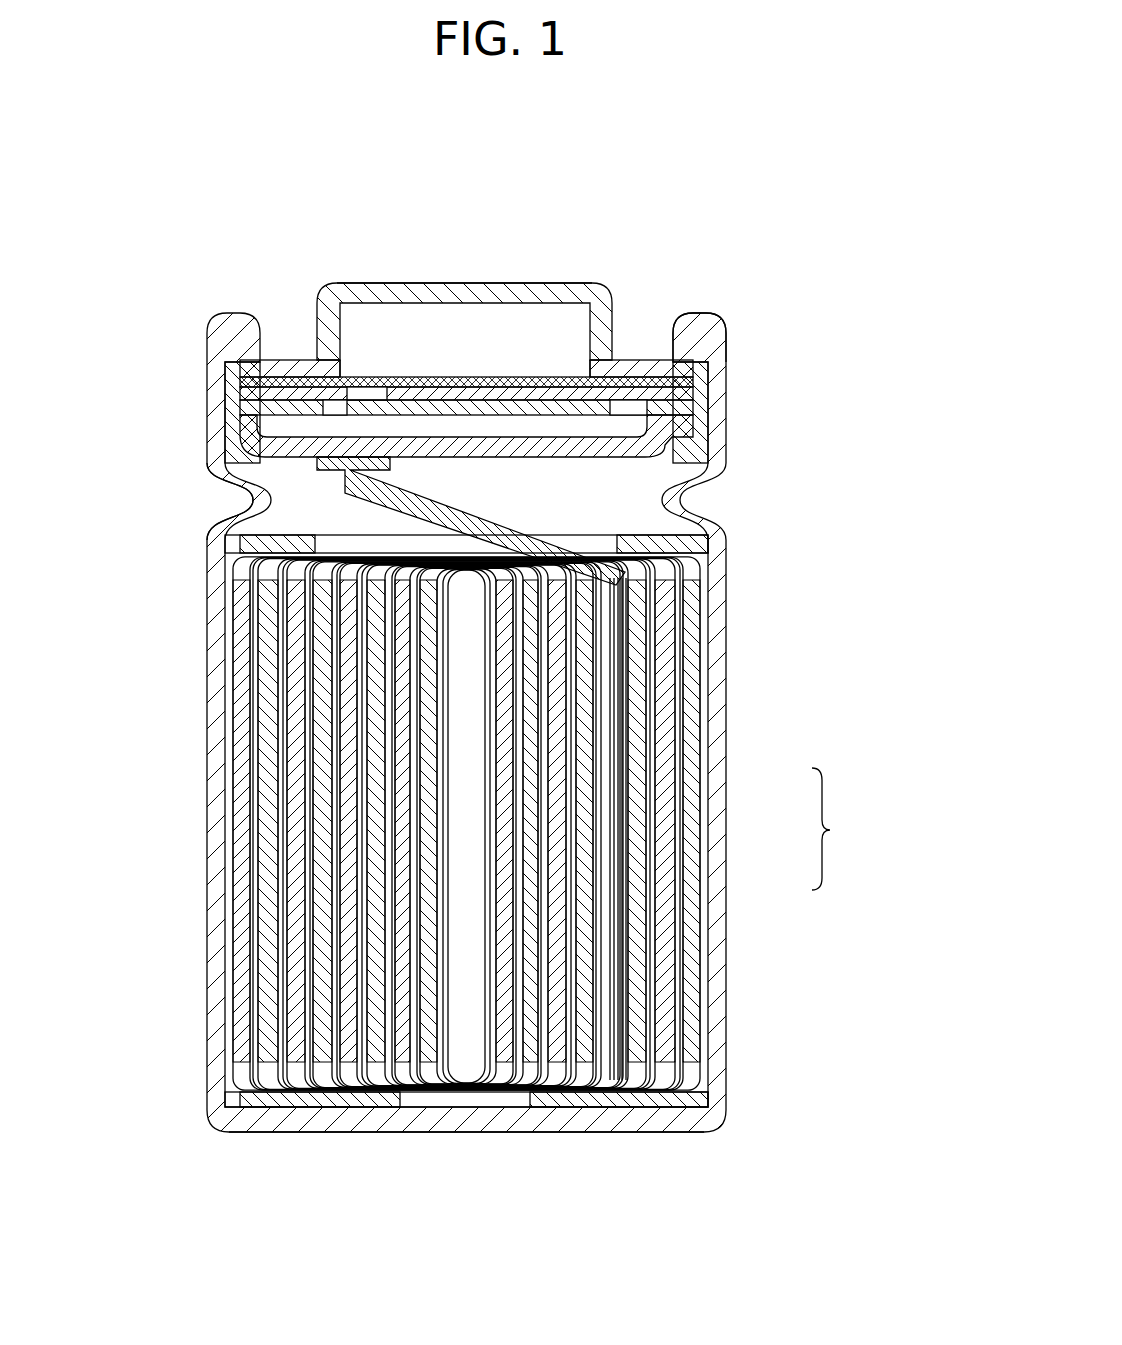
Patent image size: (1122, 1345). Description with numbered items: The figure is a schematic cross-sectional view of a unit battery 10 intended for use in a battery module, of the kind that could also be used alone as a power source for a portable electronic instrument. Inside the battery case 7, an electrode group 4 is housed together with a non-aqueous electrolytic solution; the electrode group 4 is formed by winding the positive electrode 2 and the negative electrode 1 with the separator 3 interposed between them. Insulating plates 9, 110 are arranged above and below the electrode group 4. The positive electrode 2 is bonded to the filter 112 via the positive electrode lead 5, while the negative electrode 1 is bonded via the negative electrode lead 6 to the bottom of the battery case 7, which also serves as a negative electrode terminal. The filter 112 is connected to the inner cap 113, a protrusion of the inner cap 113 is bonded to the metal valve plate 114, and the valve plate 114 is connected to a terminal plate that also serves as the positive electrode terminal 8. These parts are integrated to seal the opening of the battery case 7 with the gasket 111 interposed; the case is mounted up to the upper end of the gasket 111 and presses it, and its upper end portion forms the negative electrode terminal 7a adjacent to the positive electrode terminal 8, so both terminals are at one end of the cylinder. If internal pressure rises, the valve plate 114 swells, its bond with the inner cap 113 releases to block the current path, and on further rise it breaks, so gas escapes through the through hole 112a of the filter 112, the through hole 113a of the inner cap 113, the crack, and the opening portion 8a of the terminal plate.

The unit battery 10 is at (728, 214).
The battery case 7 is at (215, 740).
The negative electrode terminal 7a is at (701, 302).
The positive electrode lead 5 is at (275, 505).
The negative electrode lead 6 is at (500, 1110).
The gasket 111 is at (712, 338).
The filter 112 is at (700, 432).
The through hole of filter 112a is at (470, 456).
The inner cap 113 is at (420, 396).
The through hole of inner cap 113a is at (380, 394).
The valve plate 114 is at (340, 372).
The positive electrode terminal 8 is at (548, 287).
The opening portion of terminal plate 8a is at (470, 300).
The insulating plate 9 is at (712, 541).
The insulating plate 110 is at (700, 1095).
The electrode group 4 is at (541, 823).
The separator 3 is at (705, 772).
The negative electrode 1 is at (695, 812).
The positive electrode 2 is at (668, 842).